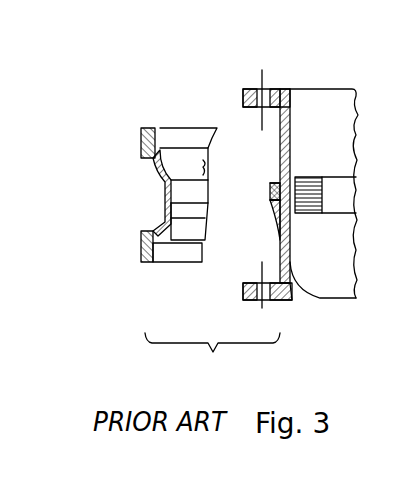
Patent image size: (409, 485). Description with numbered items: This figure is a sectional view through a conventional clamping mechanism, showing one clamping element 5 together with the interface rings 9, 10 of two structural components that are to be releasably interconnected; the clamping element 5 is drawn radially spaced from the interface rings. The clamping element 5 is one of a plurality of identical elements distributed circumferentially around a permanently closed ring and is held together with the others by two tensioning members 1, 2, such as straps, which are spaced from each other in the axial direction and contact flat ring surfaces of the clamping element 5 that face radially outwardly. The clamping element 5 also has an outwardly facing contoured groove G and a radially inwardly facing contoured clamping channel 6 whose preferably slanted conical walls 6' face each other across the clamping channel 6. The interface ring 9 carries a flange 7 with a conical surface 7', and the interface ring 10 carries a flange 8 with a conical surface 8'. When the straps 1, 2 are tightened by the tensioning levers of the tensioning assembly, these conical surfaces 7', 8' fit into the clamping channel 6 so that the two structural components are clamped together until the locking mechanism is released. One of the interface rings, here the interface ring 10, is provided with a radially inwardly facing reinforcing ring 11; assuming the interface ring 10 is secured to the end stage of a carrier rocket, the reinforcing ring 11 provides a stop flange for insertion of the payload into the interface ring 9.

The tensioning member 1 is at (141, 133).
The tensioning member 2 is at (141, 248).
The clamping element 5 is at (172, 243).
The clamping channel 6 is at (188, 112).
The slanted conical walls 6' is at (189, 218).
The flange 7 is at (253, 187).
The conical surface 7' is at (261, 162).
The flange 8 is at (257, 214).
The conical surface 8' is at (253, 219).
The interface ring 9 is at (288, 90).
The interface ring 10 is at (328, 298).
The reinforcing ring 11 is at (322, 185).
The contoured groove G is at (147, 194).